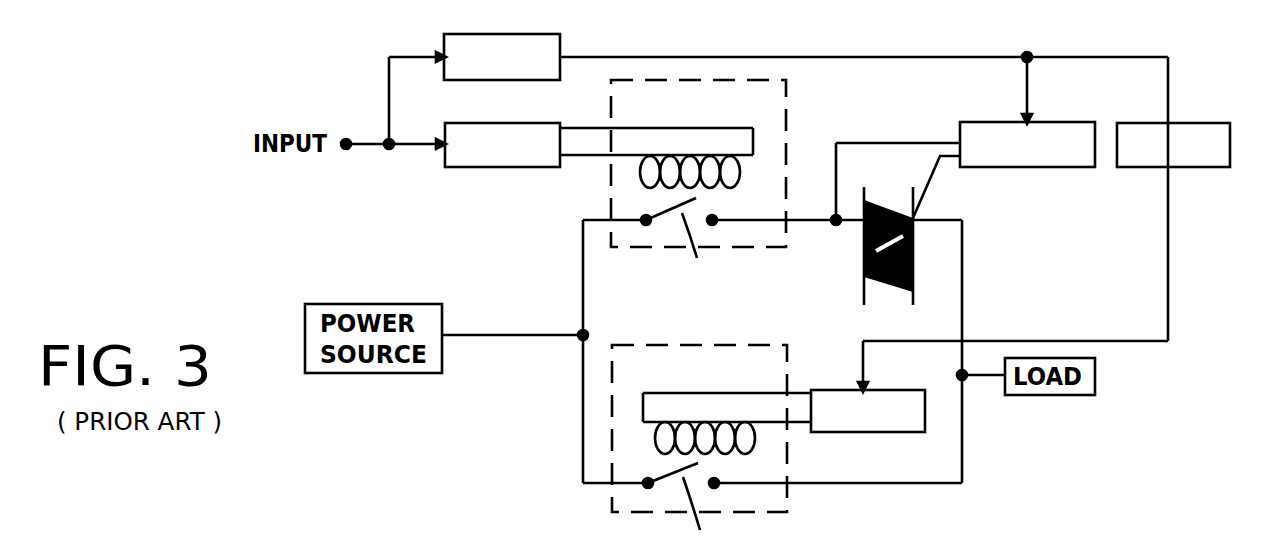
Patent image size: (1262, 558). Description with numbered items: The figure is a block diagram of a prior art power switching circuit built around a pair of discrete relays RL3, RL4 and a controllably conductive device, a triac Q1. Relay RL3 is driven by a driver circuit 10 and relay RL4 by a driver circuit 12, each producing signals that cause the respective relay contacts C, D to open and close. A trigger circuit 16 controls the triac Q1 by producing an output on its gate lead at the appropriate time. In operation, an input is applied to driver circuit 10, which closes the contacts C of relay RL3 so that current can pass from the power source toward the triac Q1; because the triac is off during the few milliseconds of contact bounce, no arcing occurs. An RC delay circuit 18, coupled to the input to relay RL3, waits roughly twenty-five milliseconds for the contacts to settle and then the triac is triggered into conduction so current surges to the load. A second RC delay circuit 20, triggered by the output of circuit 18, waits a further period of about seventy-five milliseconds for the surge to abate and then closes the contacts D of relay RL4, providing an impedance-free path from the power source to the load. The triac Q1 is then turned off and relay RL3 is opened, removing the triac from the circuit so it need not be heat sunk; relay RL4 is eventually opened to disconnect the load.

The driver circuit 10 is at (502, 167).
The driver circuit 12 is at (846, 369).
The trigger circuit 16 is at (1062, 168).
The RC delay circuit 18 is at (473, 32).
The second RC delay circuit 20 is at (1147, 168).
The relay RL3 is at (669, 247).
The relay RL4 is at (635, 512).
The triac Q1 is at (862, 247).
The contacts C is at (701, 247).
The contacts D is at (706, 510).